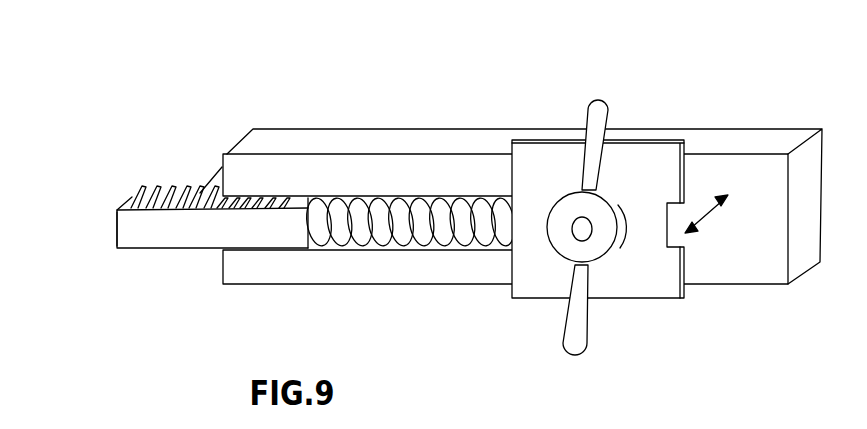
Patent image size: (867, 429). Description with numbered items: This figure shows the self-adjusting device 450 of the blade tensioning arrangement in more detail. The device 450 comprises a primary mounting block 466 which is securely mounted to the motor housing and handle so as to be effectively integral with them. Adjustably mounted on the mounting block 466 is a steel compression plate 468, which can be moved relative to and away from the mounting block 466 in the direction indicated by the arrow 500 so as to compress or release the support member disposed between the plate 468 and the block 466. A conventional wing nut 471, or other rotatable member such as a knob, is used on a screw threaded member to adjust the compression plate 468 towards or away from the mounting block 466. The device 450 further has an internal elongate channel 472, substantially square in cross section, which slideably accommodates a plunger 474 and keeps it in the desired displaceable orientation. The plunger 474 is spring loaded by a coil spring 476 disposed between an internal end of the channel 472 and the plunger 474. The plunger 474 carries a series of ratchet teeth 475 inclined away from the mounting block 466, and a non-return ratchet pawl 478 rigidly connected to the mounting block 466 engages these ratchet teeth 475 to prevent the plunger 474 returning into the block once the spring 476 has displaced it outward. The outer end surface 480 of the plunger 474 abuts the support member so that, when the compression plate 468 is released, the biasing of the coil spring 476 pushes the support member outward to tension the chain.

The self-adjusting device 450 is at (773, 315).
The primary mounting block 466 is at (763, 138).
The compression plate 468 is at (660, 160).
The wing nut 471 is at (603, 233).
The internal elongate channel 472 is at (472, 250).
The plunger 474 is at (205, 227).
The ratchet teeth 475 is at (182, 182).
The coil spring 476 is at (403, 197).
The non-return ratchet pawl 478 is at (200, 182).
The outer end surface 480 is at (118, 224).
The arrow 500 is at (726, 220).